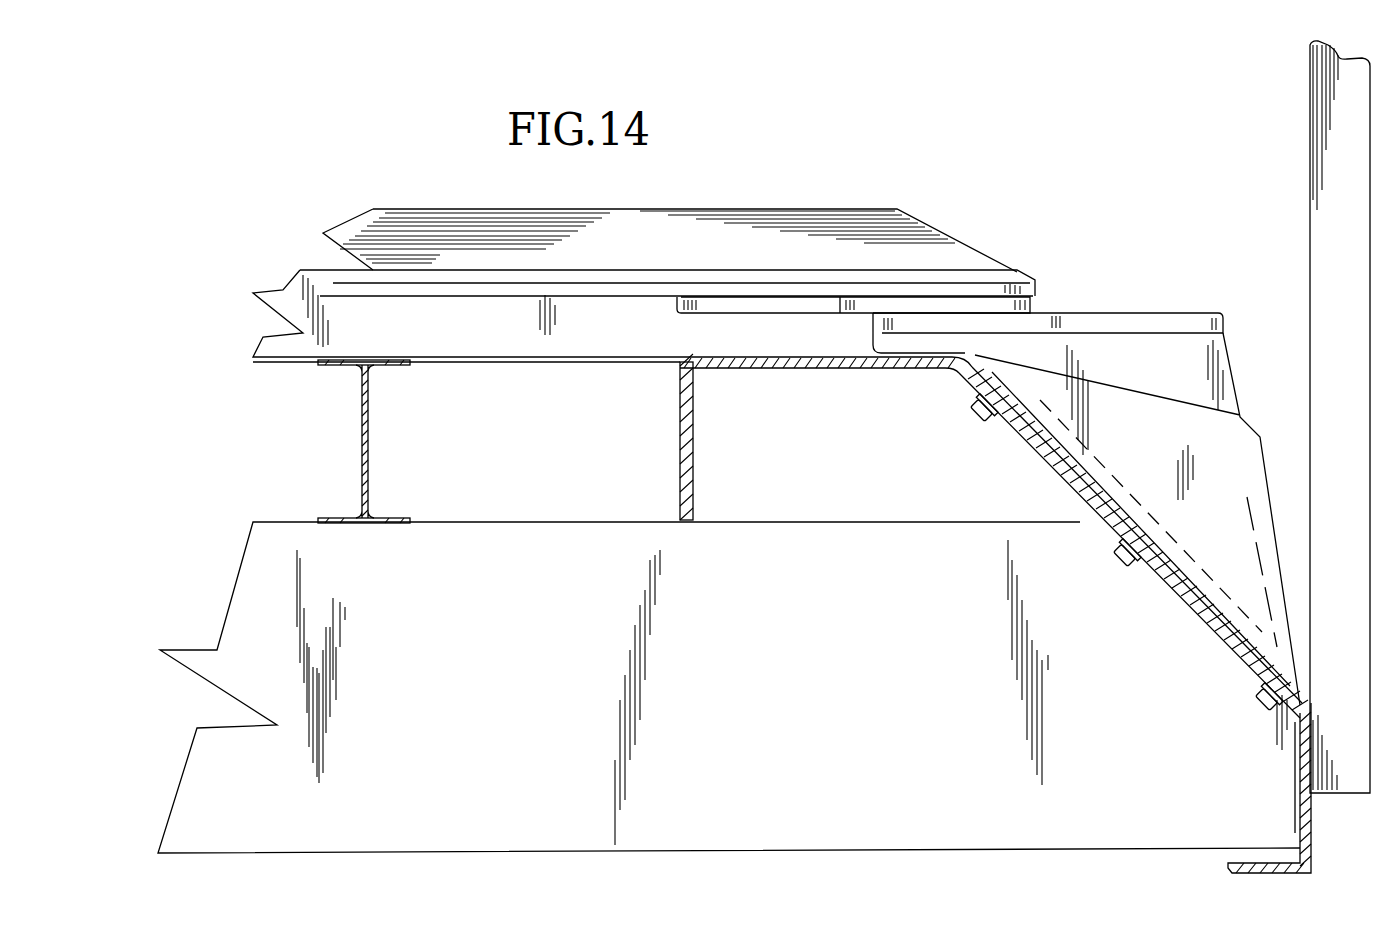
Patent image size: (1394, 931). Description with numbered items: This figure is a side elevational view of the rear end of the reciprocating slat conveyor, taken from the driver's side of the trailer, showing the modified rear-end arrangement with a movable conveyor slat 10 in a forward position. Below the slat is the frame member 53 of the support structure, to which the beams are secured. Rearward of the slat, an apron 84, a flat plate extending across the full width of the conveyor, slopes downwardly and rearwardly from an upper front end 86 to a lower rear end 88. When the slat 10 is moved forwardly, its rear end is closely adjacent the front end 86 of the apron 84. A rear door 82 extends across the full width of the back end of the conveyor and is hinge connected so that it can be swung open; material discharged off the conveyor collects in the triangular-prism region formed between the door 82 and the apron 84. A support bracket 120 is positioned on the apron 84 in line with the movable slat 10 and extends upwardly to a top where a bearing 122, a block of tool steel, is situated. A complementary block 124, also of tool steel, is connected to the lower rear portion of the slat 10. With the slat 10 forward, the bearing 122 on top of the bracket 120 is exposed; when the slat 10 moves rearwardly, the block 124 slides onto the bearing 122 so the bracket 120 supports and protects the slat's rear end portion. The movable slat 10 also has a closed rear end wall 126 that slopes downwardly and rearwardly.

The movable conveyor slat 10 is at (644, 250).
The rear end wall 126 is at (970, 246).
The complementary block 124 is at (758, 305).
The bearing 122 is at (1067, 327).
The front end of apron 86 is at (820, 370).
The apron 84 is at (1090, 494).
The support bracket 120 is at (1207, 540).
The rear end of apron 88 is at (1300, 778).
The rear door 82 is at (1327, 155).
The frame member 53 is at (368, 445).